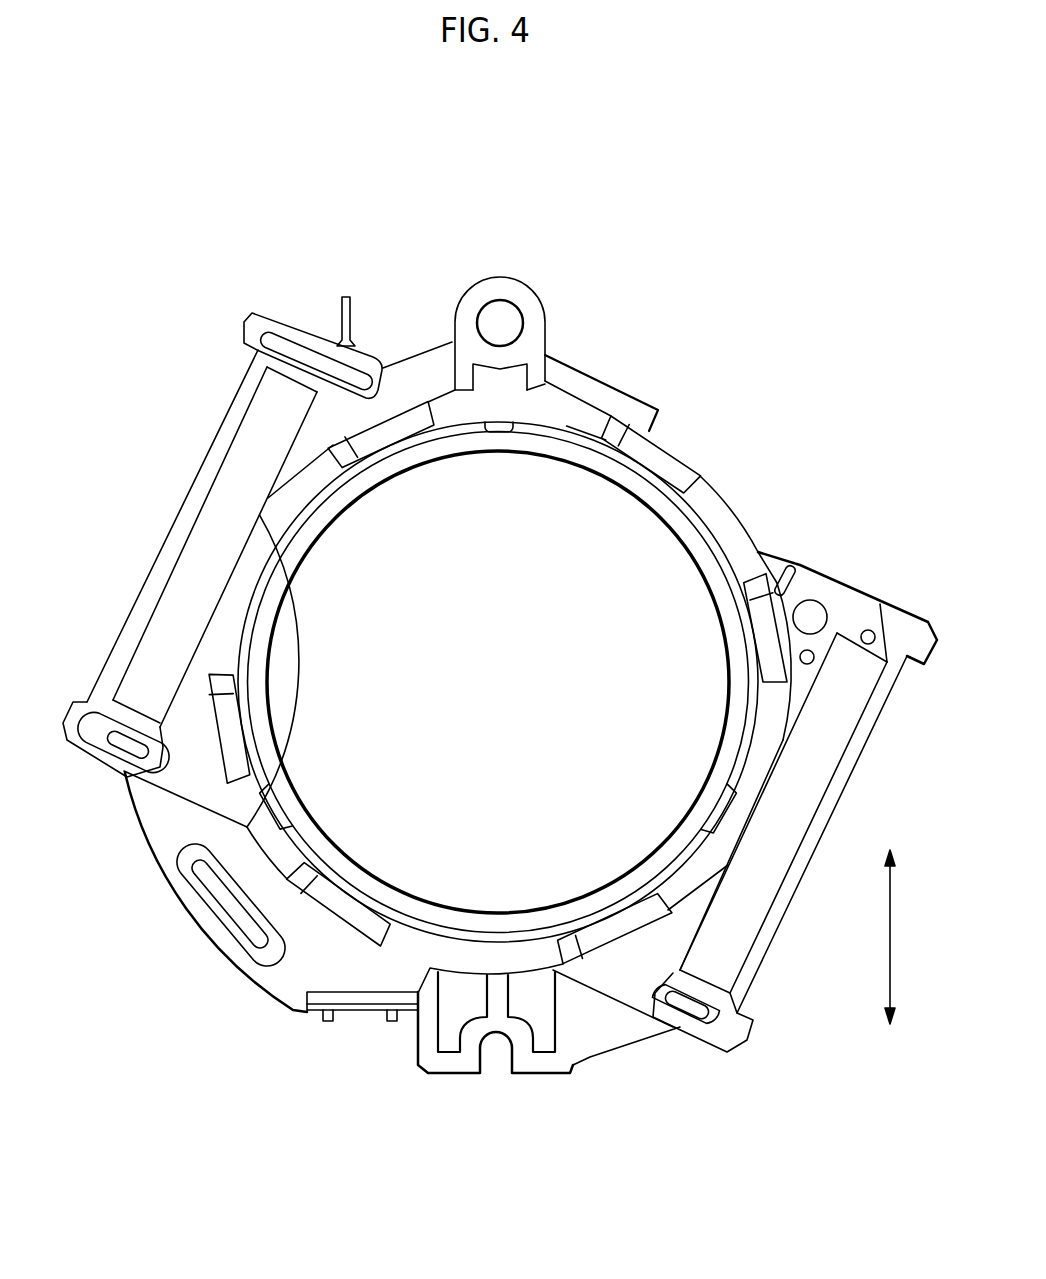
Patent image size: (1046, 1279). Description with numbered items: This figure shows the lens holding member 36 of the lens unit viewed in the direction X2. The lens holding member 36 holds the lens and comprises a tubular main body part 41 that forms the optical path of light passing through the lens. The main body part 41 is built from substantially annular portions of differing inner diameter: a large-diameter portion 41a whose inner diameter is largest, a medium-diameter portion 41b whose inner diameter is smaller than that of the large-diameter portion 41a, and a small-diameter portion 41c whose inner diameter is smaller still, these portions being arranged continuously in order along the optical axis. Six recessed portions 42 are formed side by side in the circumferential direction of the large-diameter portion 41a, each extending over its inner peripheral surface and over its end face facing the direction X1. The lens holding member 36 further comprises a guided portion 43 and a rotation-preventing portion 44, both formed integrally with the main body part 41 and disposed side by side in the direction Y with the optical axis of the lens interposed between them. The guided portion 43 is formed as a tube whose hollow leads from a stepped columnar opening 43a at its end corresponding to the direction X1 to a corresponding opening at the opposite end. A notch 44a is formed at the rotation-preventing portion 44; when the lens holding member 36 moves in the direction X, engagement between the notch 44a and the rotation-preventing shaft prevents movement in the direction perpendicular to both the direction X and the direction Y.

The lens holding member 36 is at (632, 302).
The main body part 41 is at (722, 484).
The large-diameter portion 41a is at (245, 568).
The medium-diameter portion 41b is at (297, 522).
The small-diameter portion 41c is at (310, 520).
The recessed portions 42 is at (337, 443).
The guided portion 43 is at (512, 288).
The stepped columnar opening 43a is at (478, 320).
The rotation-preventing portion 44 is at (540, 1066).
The notch 44a is at (490, 1066).